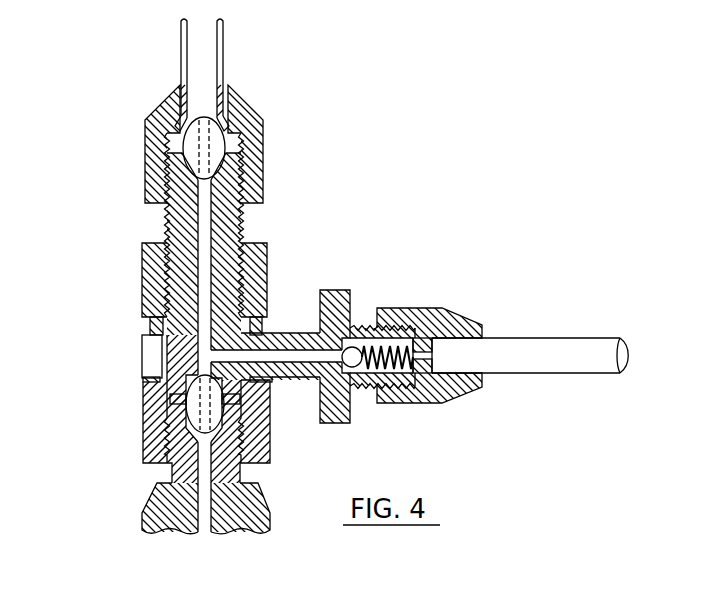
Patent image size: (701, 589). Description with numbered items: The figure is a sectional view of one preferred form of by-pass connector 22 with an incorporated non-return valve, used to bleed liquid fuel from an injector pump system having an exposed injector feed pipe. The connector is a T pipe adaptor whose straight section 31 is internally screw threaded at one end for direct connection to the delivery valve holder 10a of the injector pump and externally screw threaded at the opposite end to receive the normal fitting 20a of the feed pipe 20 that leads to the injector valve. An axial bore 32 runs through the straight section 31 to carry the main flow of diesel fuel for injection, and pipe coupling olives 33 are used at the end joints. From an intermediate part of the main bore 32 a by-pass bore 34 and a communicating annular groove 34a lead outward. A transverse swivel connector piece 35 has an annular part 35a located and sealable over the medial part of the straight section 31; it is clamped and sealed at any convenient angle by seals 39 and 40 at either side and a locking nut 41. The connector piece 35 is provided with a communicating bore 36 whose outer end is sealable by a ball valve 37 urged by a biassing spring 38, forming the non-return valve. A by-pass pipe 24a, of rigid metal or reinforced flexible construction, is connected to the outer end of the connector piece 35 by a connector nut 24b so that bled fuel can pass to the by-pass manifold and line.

The feed pipe 20 is at (205, 50).
The normal fitting 20a is at (240, 108).
The pipe coupling olives 33 is at (193, 137).
The by-pass connector 22 is at (293, 231).
The straight section 31 is at (222, 243).
The axial bore 32 is at (198, 323).
The locking nut 41 is at (152, 277).
The seal 40 is at (147, 328).
The annular part 35a is at (147, 360).
The annular groove 34a is at (163, 350).
The seal 39 is at (172, 400).
The by-pass bore 34 is at (230, 357).
The delivery valve holder 10a is at (173, 522).
The communicating bore 36 is at (282, 343).
The transverse swivel connector piece 35 is at (326, 305).
The ball valve 37 is at (355, 366).
The biassing spring 38 is at (393, 368).
The connector nut 24b is at (442, 308).
The by-pass pipe 24a is at (510, 347).